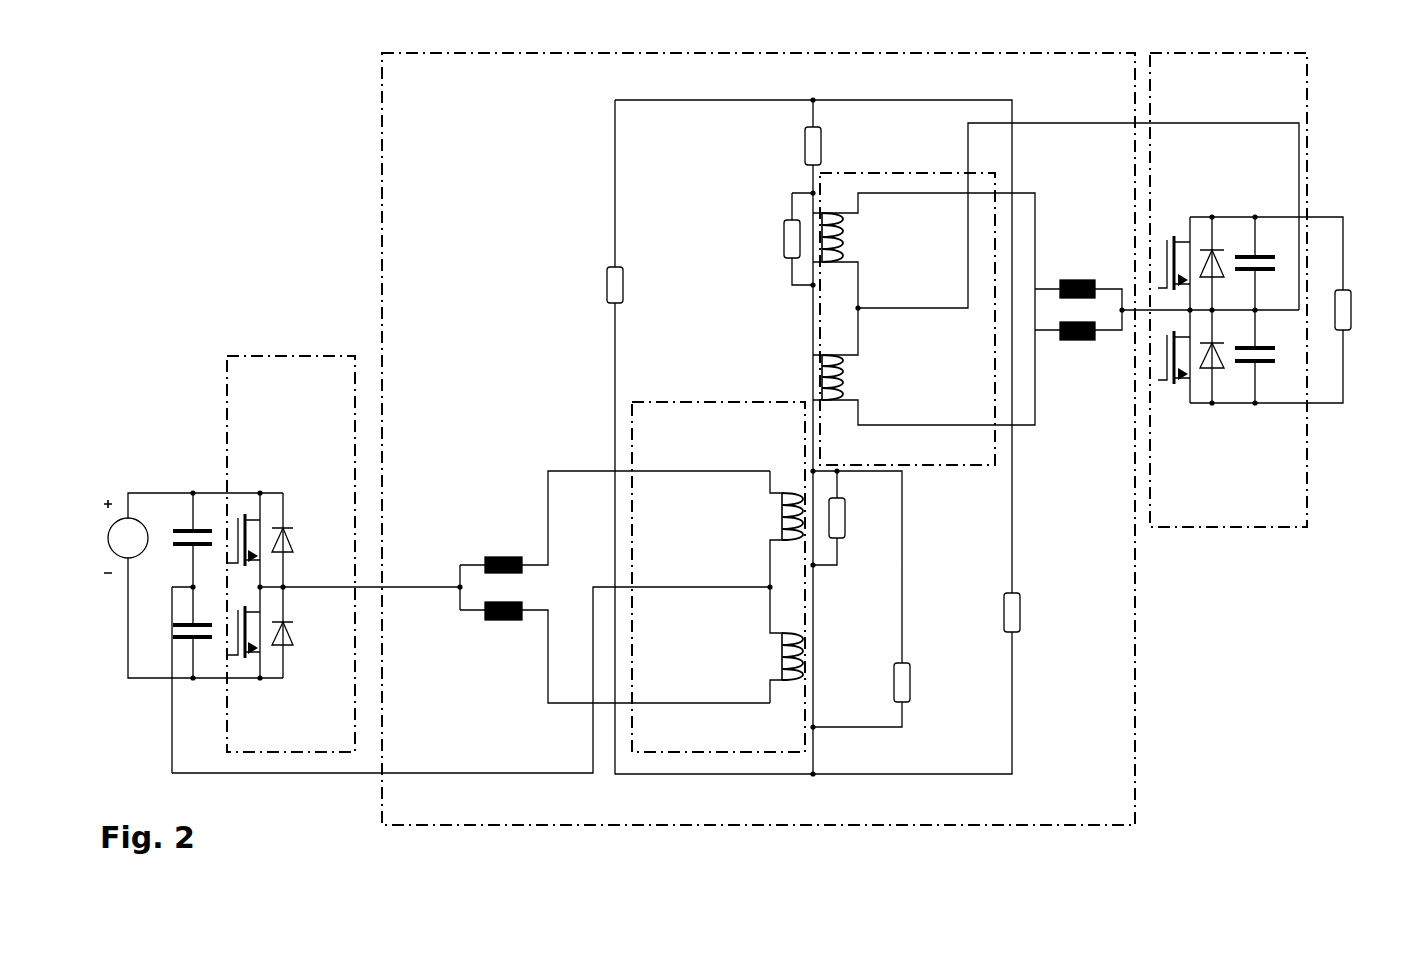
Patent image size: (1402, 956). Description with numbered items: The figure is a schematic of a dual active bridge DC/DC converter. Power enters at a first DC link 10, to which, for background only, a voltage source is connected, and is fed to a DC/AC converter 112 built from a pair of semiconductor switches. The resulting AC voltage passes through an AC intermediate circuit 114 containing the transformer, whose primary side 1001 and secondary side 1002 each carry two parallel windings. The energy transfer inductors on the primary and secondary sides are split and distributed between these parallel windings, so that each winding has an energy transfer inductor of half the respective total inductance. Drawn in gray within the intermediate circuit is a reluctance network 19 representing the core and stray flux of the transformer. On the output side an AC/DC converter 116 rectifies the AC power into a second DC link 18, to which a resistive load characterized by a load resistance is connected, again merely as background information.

The first DC link 10 is at (190, 520).
The reluctance network 19 is at (613, 392).
The second DC link 18 is at (1255, 378).
The DC/AC converter 112 is at (343, 554).
The AC intermediate circuit 114 is at (735, 439).
The AC/DC converter 116 is at (1268, 328).
The primary side of the transformer 1001 is at (771, 577).
The secondary side of the transformer 1002 is at (1041, 294).